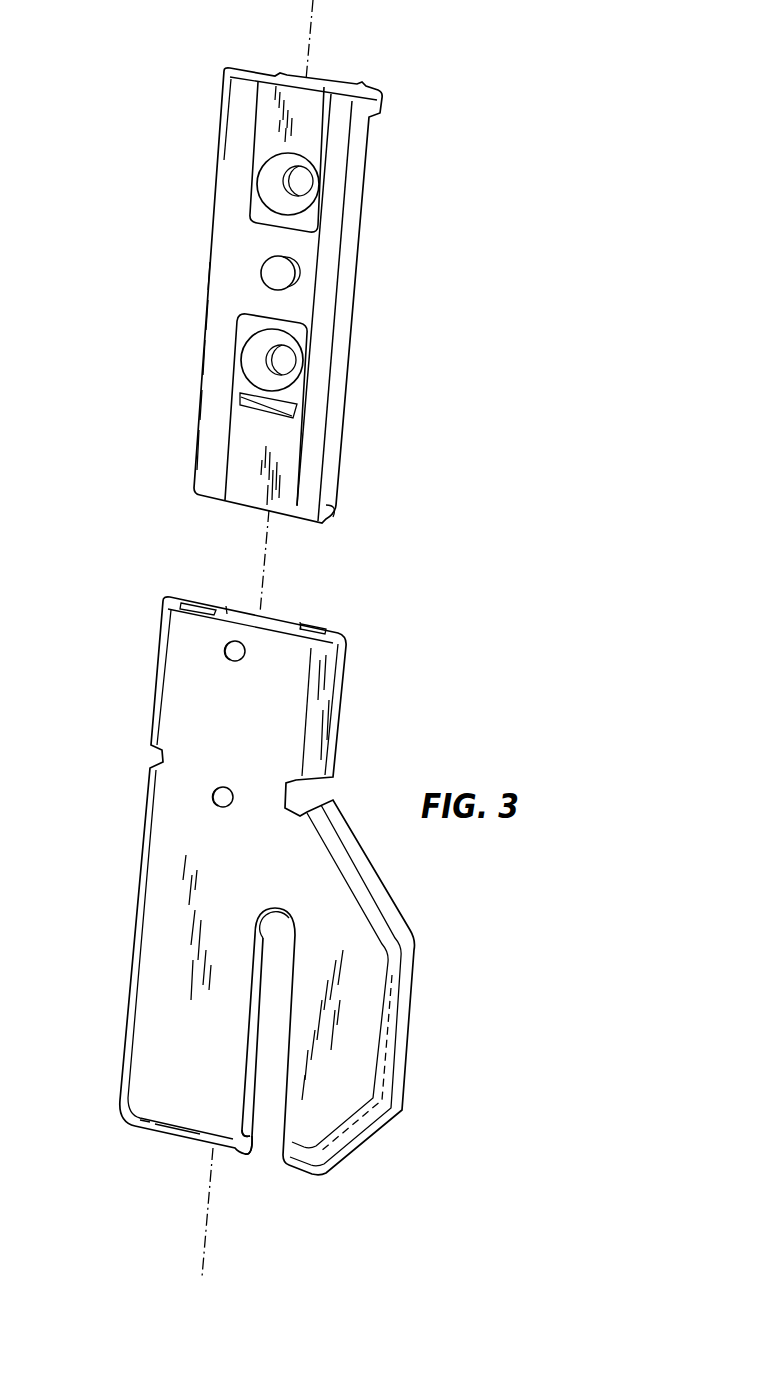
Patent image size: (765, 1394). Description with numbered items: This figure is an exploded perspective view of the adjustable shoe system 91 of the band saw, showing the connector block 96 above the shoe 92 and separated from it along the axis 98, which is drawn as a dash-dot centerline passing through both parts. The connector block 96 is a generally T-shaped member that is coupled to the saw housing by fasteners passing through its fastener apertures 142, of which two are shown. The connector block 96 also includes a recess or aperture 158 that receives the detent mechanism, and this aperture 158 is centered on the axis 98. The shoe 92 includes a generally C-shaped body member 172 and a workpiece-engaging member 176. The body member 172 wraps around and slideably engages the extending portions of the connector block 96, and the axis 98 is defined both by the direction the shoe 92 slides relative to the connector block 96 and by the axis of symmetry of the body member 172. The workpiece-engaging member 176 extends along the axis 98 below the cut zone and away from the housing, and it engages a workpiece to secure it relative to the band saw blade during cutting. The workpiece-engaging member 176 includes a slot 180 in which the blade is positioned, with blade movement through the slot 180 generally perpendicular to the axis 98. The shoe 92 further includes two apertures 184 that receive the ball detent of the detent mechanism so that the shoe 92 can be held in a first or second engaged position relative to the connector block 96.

The adjustable shoe system 91 is at (510, 206).
The shoe 92 is at (138, 893).
The connector block 96 is at (325, 258).
The axis 98 is at (312, 30).
The fastener apertures 142 is at (282, 188).
The recess or aperture 158 is at (289, 289).
The body member 172 is at (314, 696).
The workpiece-engaging member 176 is at (182, 1032).
The slot 180 is at (264, 1118).
The apertures 184 is at (228, 658).